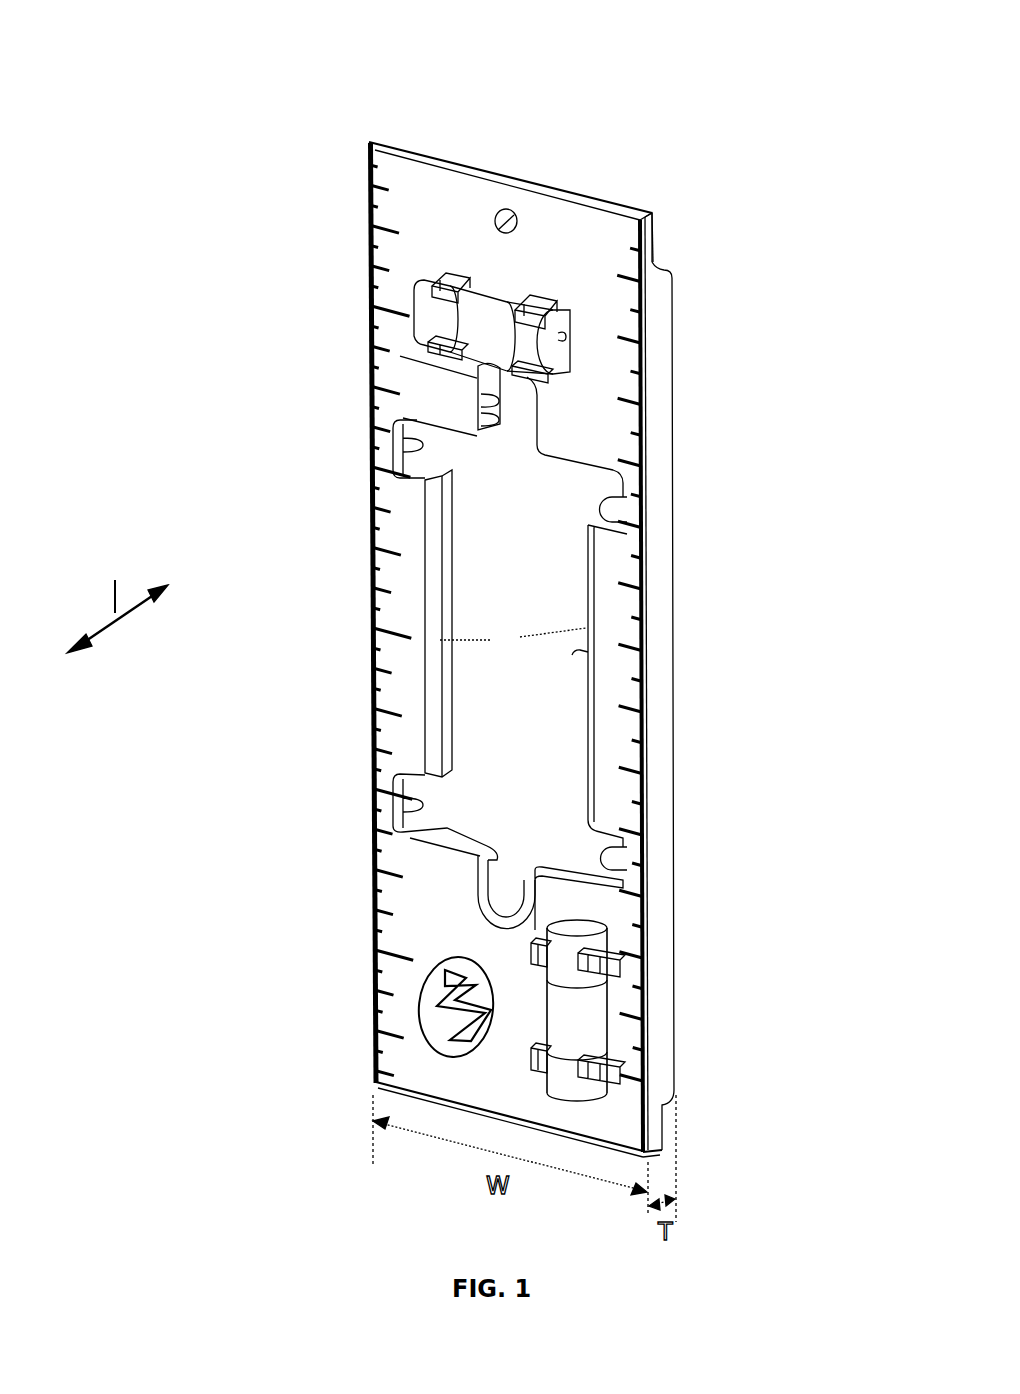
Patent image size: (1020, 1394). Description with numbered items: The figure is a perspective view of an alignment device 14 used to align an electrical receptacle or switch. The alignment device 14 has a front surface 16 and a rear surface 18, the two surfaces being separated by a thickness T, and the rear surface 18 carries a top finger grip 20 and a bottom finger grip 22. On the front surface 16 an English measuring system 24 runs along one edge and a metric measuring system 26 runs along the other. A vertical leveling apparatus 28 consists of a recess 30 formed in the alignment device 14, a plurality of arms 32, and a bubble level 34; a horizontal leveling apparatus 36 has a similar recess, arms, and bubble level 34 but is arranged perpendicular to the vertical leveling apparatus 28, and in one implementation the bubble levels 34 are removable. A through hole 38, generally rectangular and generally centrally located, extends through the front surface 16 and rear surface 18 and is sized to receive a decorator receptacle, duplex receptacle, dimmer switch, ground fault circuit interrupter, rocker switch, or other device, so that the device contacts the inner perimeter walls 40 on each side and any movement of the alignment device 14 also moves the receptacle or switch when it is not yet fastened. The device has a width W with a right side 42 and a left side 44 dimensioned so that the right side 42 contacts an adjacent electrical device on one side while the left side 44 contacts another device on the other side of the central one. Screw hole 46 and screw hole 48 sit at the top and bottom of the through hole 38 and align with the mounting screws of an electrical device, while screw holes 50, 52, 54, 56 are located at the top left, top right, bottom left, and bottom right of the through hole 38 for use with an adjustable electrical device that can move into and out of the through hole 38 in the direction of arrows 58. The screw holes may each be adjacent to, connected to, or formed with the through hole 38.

The alignment device 14 is at (551, 141).
The front surface 16 is at (562, 245).
The rear surface 18 is at (676, 306).
The top finger grip 20 is at (656, 226).
The bottom finger grip 22 is at (668, 1118).
The English measuring system 24 is at (371, 617).
The metric measuring system 26 is at (640, 777).
The vertical leveling apparatus 28 is at (412, 278).
The recess 30 is at (568, 336).
The arms 32 is at (527, 296).
The bubble level 34 is at (572, 357).
The horizontal leveling apparatus 36 is at (532, 1084).
The through hole 38 is at (620, 678).
The inner perimeter walls 40 is at (587, 868).
The right side 42 is at (666, 602).
The left side 44 is at (372, 678).
The screw hole 46 is at (482, 375).
The screw hole 48 is at (482, 918).
The screw hole 50 is at (400, 430).
The screw hole 52 is at (618, 520).
The screw hole 54 is at (374, 798).
The screw hole 56 is at (614, 861).
The arrows 58 is at (117, 599).